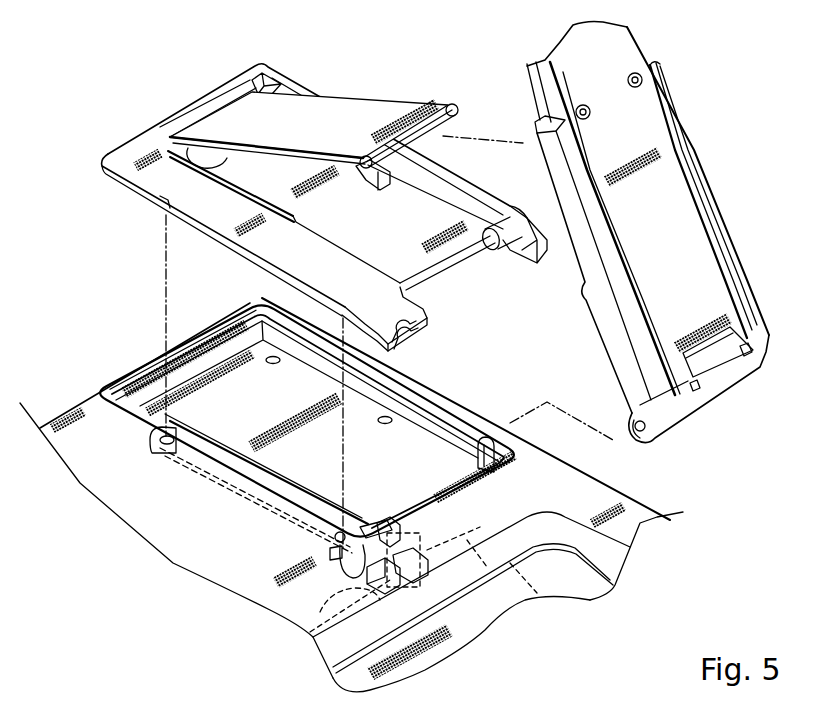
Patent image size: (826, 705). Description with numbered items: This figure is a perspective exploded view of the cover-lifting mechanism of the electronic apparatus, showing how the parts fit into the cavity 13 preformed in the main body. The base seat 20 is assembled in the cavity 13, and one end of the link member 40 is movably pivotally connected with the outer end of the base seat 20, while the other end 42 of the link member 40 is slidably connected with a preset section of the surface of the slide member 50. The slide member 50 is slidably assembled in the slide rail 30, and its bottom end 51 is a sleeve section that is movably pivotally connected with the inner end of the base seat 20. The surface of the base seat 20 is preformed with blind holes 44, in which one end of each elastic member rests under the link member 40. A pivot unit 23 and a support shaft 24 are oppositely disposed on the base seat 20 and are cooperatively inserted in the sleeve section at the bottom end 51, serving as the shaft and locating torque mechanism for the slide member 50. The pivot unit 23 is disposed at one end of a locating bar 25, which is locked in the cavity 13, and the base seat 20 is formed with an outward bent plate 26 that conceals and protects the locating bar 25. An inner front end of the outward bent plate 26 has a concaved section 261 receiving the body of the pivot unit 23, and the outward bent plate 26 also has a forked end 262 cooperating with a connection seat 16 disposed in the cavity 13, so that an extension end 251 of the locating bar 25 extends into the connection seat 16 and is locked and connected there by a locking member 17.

The cavity 13 is at (247, 400).
The connection seat 16 is at (310, 632).
The locking member 17 is at (457, 610).
The base seat 20 is at (140, 197).
The pivot unit 23 is at (540, 590).
The support shaft 24 is at (507, 253).
The locating bar 25 is at (262, 478).
The outward bent plate 26 is at (137, 157).
The slide rail 30 is at (605, 53).
The link member 40 is at (340, 110).
The other end of the link member 42 is at (456, 100).
The blind holes 44 is at (200, 162).
The slide member 50 is at (720, 203).
The bottom end of the slide member 51 is at (693, 417).
The extension end 251 is at (513, 597).
The concaved section 261 is at (358, 332).
The forked end 262 is at (428, 299).